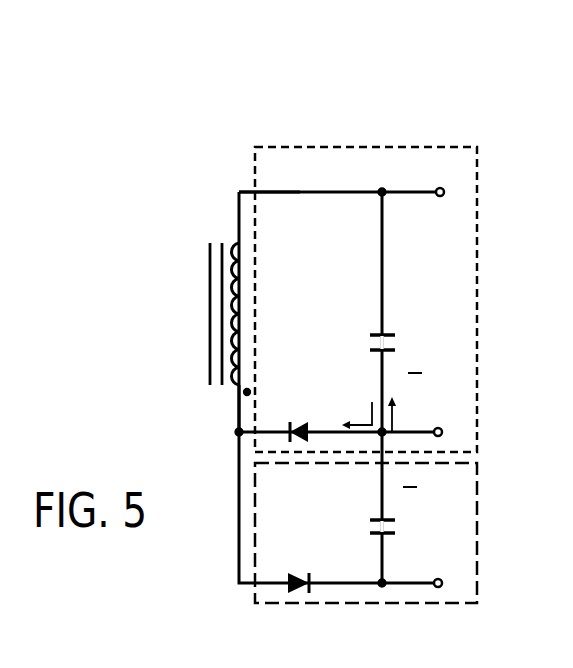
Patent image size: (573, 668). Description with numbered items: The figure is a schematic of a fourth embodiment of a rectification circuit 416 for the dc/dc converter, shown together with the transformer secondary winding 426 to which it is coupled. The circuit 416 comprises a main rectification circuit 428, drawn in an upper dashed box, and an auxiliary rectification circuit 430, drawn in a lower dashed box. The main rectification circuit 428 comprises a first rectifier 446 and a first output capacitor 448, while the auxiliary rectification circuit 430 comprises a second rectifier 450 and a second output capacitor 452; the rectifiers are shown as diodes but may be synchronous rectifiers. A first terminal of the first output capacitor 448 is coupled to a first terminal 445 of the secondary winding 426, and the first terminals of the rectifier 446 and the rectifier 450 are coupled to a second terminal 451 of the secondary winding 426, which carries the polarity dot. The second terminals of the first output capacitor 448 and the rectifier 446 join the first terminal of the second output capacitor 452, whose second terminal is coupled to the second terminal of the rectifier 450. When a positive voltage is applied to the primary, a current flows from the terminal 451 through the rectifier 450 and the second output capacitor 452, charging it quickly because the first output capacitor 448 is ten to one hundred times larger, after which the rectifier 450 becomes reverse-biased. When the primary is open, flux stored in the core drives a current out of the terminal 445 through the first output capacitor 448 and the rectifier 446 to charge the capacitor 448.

The rectification circuit 416 is at (214, 124).
The first terminal of the secondary winding 445 is at (239, 207).
The secondary winding 426 is at (233, 243).
The second terminal of the secondary winding 451 is at (238, 411).
The first rectifier 446 is at (297, 421).
The first output capacitor 448 is at (373, 334).
The main rectification circuit 428 is at (477, 190).
The auxiliary rectification circuit 430 is at (477, 518).
The second output capacitor 452 is at (375, 519).
The second rectifier 450 is at (296, 579).